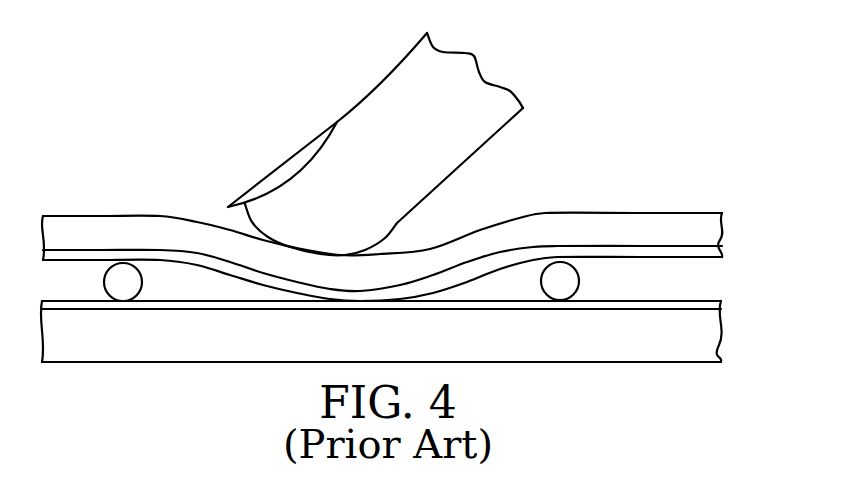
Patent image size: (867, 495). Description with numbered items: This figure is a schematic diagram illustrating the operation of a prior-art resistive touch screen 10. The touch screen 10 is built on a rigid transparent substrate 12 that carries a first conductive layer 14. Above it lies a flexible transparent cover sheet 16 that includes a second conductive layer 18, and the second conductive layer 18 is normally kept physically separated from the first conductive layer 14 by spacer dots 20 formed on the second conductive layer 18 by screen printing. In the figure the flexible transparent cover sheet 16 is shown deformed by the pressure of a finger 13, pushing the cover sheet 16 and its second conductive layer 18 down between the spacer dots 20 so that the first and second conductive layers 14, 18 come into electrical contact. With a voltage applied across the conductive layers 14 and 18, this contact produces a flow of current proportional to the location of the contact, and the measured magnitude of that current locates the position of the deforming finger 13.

The resistive touch screen 10 is at (666, 132).
The rigid transparent substrate 12 is at (708, 340).
The finger 13 is at (458, 75).
The first conductive layer 14 is at (710, 302).
The flexible transparent cover sheet 16 is at (708, 227).
The second conductive layer 18 is at (708, 250).
The spacer dots 20 is at (560, 278).